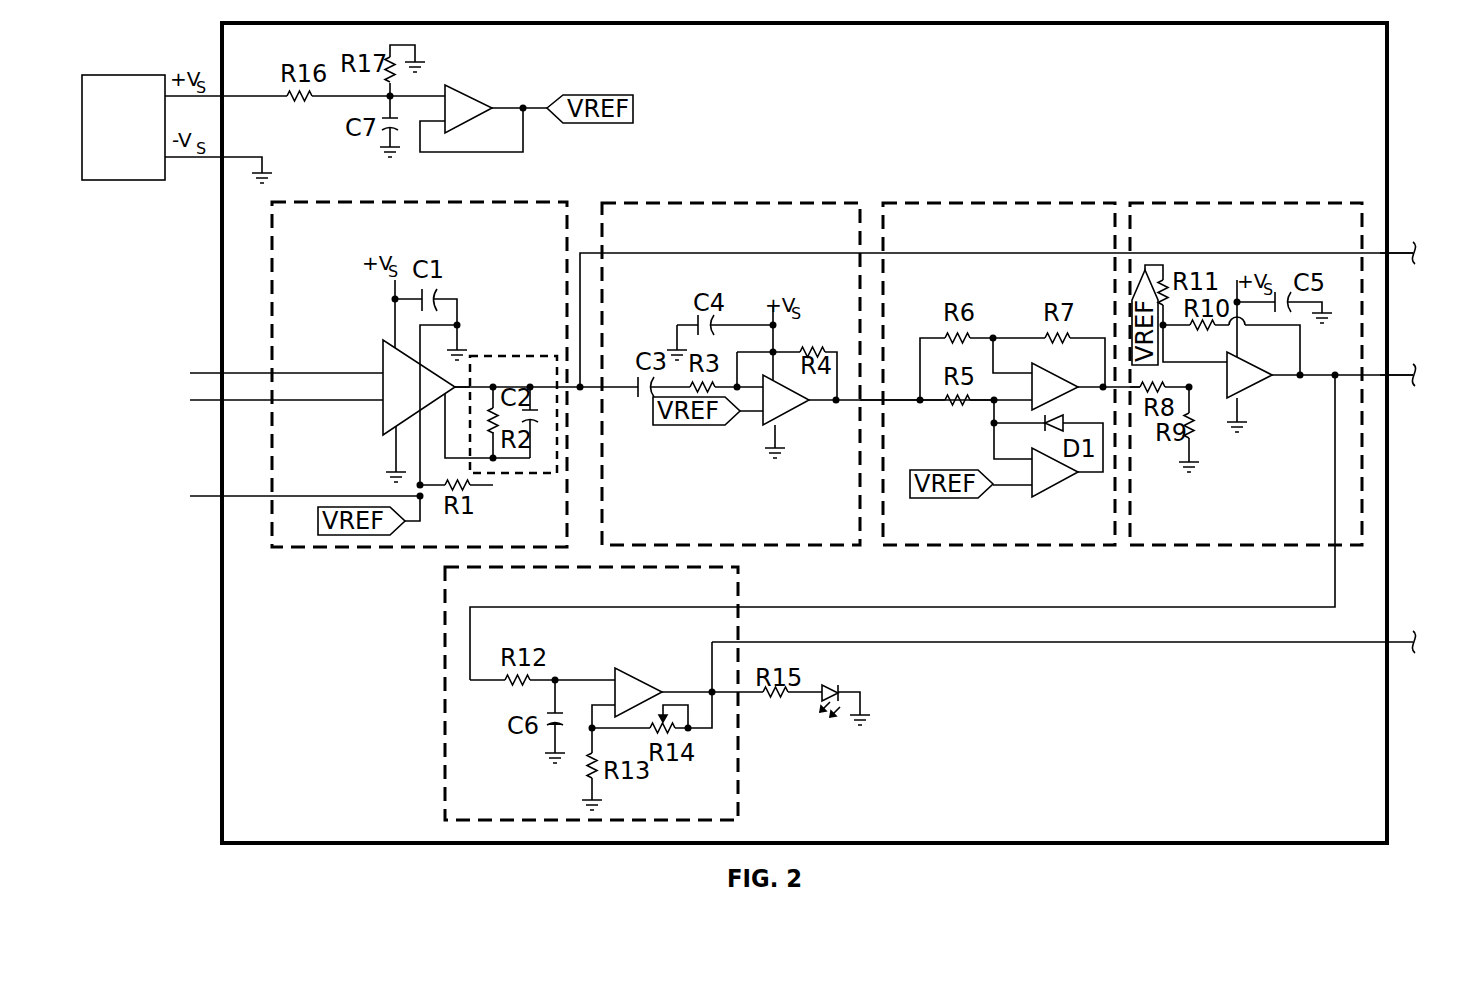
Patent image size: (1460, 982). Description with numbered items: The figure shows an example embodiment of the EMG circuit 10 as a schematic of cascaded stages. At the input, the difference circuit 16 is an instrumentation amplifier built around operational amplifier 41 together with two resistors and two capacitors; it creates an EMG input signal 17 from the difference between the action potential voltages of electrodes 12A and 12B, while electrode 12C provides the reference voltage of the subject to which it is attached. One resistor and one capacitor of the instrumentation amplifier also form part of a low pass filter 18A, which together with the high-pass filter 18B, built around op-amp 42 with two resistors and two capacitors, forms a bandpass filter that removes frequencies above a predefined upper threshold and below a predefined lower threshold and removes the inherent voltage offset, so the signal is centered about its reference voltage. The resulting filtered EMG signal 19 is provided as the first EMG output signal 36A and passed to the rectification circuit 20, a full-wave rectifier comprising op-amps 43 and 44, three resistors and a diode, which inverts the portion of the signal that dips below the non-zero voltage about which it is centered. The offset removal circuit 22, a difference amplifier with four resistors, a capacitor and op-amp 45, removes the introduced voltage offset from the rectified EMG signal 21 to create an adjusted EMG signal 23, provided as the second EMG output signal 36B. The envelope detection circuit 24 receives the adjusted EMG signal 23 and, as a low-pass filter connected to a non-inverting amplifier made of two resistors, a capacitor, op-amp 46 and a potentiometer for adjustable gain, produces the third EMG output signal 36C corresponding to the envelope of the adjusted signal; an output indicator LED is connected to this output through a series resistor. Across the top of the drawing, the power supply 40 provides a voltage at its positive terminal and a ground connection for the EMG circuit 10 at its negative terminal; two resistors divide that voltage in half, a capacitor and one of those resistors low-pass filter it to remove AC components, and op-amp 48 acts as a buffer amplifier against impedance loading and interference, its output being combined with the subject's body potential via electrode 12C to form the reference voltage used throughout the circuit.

The EMG circuit 10 is at (1390, 45).
The power supply 40 is at (133, 75).
The op-amp 48 is at (460, 92).
The difference circuit 16 is at (500, 203).
The EMG input signal 17 is at (458, 382).
The low pass filter 18A is at (515, 356).
The high-pass filter 18B is at (795, 203).
The rectification circuit 20 is at (1040, 203).
The offset removal circuit 22 is at (1310, 203).
The envelope detection circuit 24 is at (445, 617).
The electrode 12A is at (265, 375).
The electrode 12B is at (265, 402).
The electrode 12C is at (283, 498).
The operational amplifier 41 is at (387, 428).
The op-amp 42 is at (790, 415).
The op-amp 43 is at (1055, 395).
The op-amp 44 is at (1055, 482).
The op-amp 45 is at (1255, 388).
The op-amp 46 is at (640, 680).
The filtered EMG signal 19 is at (878, 402).
The rectified EMG signal 21 is at (1120, 392).
The adjusted EMG signal 23 is at (1333, 570).
The first EMG output signal 36A is at (1398, 253).
The second EMG output signal 36B is at (1398, 375).
The third EMG output signal 36C is at (1398, 642).